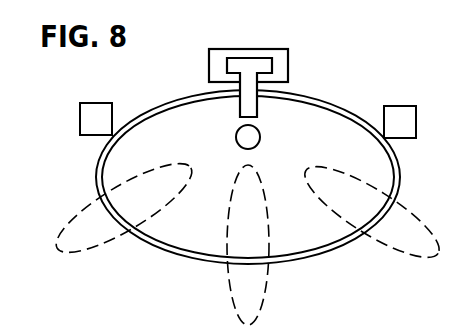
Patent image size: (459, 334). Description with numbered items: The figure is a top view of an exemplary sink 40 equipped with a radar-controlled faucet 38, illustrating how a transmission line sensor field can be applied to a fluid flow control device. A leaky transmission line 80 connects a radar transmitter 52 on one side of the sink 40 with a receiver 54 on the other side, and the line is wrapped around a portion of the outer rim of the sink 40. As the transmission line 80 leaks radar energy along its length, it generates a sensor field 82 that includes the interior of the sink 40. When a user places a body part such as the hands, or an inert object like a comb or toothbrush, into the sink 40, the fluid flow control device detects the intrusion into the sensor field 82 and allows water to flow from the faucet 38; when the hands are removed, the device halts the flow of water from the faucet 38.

The radar-controlled faucet 38 is at (268, 50).
The sink 40 is at (320, 100).
The radar transmitter 52 is at (91, 103).
The receiver 54 is at (407, 106).
The leaky transmission line 80 is at (176, 254).
The sensor field 82 is at (85, 246).